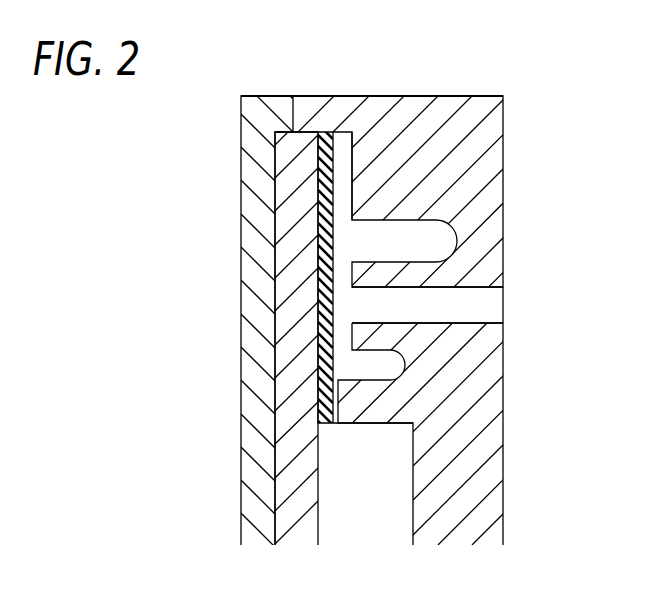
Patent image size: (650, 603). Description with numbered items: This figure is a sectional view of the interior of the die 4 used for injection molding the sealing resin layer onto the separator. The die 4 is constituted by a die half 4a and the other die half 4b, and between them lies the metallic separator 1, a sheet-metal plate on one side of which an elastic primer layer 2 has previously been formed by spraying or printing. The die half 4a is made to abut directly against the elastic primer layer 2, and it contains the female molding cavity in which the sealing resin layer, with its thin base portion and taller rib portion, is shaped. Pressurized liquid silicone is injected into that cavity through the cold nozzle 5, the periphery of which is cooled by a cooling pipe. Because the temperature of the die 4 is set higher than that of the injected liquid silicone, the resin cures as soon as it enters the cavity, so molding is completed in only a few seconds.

The metallic separator 1 is at (297, 450).
The elastic primer layer 2 is at (320, 246).
The die 4 is at (393, 38).
The die half 4a is at (363, 113).
The other die half 4b is at (255, 112).
The cold nozzle 5 is at (463, 305).